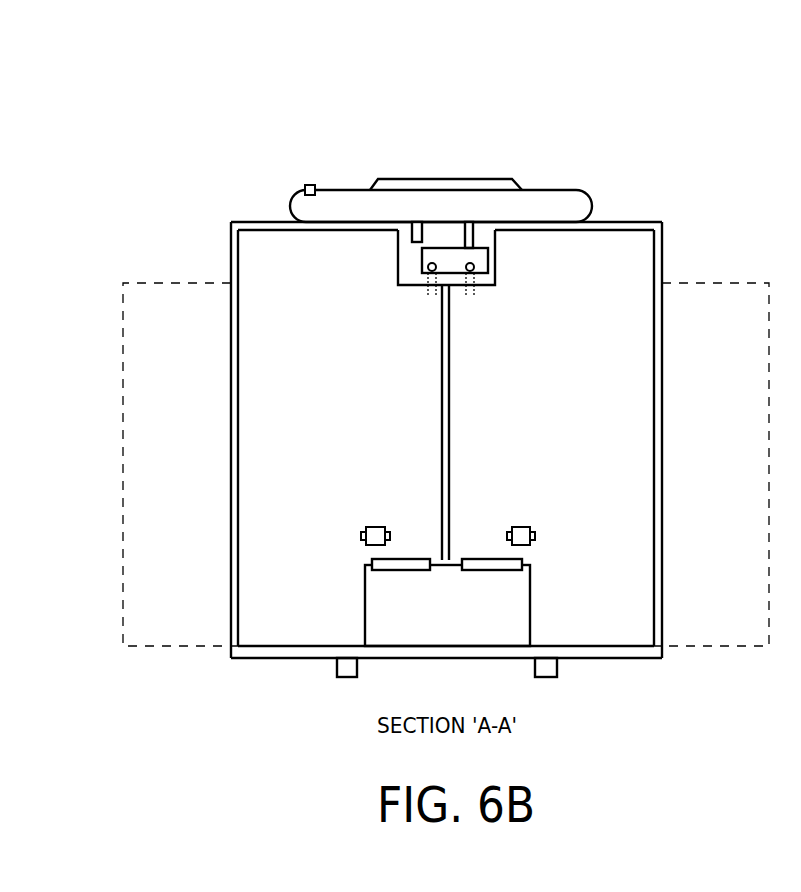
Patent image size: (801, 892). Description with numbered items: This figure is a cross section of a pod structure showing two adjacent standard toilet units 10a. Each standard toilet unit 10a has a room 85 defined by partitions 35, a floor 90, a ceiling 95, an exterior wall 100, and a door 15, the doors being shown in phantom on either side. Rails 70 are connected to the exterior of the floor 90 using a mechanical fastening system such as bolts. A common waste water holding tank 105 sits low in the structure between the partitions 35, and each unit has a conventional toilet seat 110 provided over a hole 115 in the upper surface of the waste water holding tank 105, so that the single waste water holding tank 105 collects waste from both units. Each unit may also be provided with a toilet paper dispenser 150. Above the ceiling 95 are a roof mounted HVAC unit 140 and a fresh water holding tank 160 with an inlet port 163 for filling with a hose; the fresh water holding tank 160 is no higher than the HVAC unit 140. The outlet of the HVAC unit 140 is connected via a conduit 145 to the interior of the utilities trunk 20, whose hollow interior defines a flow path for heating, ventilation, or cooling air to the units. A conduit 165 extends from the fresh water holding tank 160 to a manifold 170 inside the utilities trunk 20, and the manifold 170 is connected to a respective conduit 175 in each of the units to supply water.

The standard toilet unit 10a is at (277, 118).
The door 15 is at (145, 283).
The utilities trunk 20 is at (398, 262).
The partitions 35 is at (442, 405).
The rails 70 is at (339, 677).
The room 85 is at (318, 396).
The floor 90 is at (258, 658).
The ceiling 95 is at (633, 222).
The exterior wall 100 is at (231, 240).
The waste water holding tank 105 is at (463, 619).
The toilet seat 110 is at (417, 559).
The hole 115 is at (375, 574).
The HVAC unit 140 is at (478, 178).
The conduit 145 is at (417, 230).
The toilet paper dispenser 150 is at (359, 527).
The fresh water holding tank 160 is at (571, 188).
The inlet port 163 is at (305, 190).
The conduit 165 is at (475, 232).
The manifold 170 is at (495, 268).
The conduit 175 is at (428, 300).